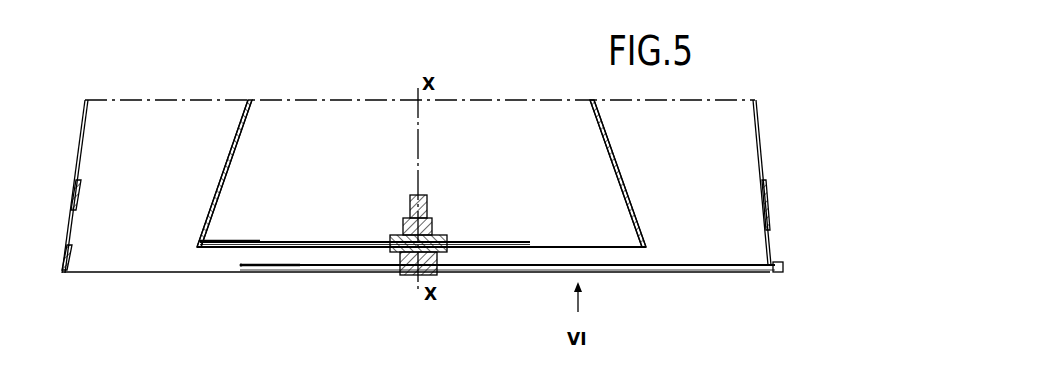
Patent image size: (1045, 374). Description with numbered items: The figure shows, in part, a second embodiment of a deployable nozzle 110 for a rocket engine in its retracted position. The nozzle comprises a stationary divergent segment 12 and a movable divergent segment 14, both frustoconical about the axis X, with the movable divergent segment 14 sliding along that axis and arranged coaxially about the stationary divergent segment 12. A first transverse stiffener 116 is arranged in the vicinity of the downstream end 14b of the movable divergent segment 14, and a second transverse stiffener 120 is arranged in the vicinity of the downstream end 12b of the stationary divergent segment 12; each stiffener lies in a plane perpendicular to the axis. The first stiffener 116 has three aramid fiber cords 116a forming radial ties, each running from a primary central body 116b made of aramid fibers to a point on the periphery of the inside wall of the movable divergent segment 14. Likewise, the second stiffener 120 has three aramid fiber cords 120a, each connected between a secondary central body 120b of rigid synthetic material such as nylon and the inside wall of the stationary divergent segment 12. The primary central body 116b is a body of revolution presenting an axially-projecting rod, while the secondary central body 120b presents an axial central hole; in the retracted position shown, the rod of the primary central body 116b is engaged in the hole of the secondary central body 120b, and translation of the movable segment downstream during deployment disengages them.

The deployable nozzle 110 is at (283, 82).
The movable divergent segment 14 is at (82, 122).
The downstream end of the movable divergent segment 14b is at (62, 275).
The stationary divergent segment 12 is at (222, 157).
The downstream end of the stationary divergent segment 12b is at (197, 247).
The second transverse stiffener 120 is at (299, 235).
The aramid fiber cords 120a is at (247, 240).
The secondary central body 120b is at (405, 220).
The first transverse stiffener 116 is at (674, 271).
The aramid fiber cords 116a is at (283, 268).
The primary central body 116b is at (410, 273).